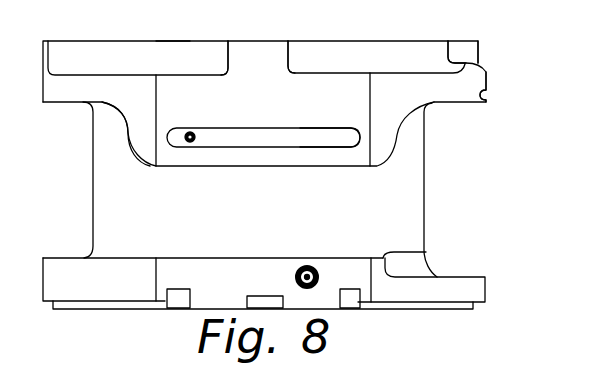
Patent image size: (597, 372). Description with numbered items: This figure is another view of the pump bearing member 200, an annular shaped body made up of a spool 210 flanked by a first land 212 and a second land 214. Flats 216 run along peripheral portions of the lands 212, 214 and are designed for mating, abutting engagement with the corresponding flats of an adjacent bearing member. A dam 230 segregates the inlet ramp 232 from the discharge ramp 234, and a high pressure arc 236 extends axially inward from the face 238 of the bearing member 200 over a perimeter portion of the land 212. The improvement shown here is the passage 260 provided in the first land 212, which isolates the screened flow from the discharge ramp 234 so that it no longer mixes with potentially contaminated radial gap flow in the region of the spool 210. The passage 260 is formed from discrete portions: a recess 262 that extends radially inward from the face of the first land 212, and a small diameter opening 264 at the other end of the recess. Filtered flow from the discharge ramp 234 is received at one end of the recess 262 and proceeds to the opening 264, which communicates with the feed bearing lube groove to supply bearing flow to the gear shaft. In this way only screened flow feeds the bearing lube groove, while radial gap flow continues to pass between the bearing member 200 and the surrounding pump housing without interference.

The pump bearing member 200 is at (100, 315).
The spool 210 is at (425, 209).
The first land 212 is at (489, 80).
The second land 214 is at (487, 288).
The flats 216 is at (190, 115).
The dam 230 is at (261, 53).
The inlet ramp 232 is at (131, 72).
The discharge ramp 234 is at (391, 73).
The high pressure arc 236 is at (462, 52).
The face 238 is at (168, 41).
The passage 260 is at (325, 141).
The recess 262 is at (248, 142).
The small diameter opening 264 is at (182, 146).